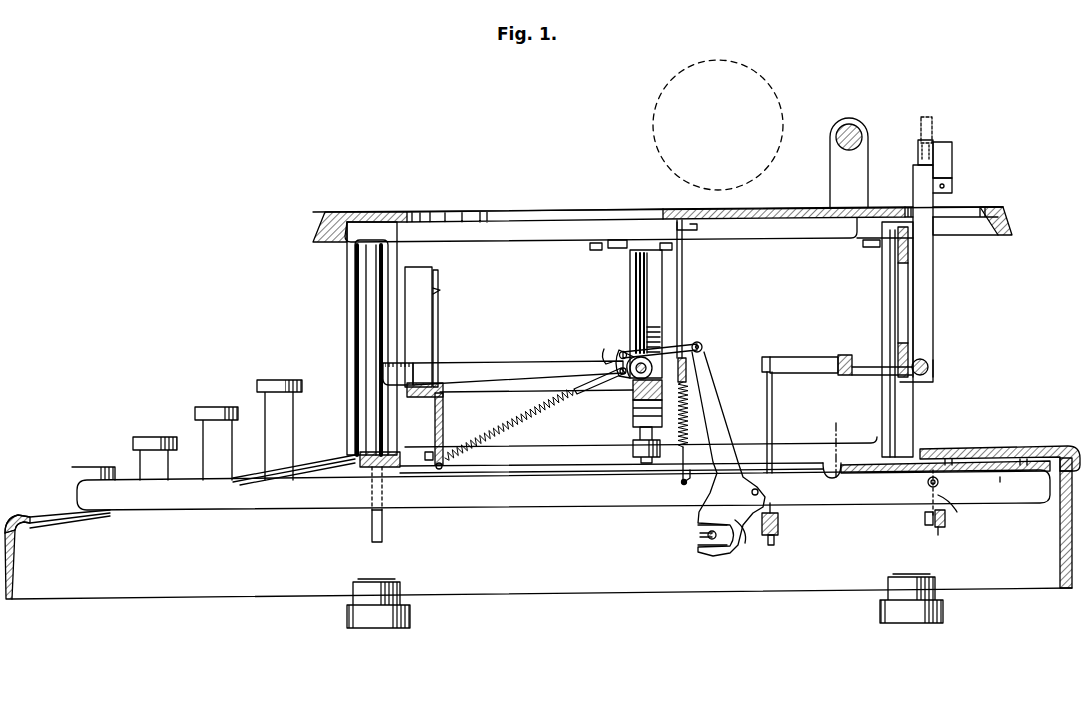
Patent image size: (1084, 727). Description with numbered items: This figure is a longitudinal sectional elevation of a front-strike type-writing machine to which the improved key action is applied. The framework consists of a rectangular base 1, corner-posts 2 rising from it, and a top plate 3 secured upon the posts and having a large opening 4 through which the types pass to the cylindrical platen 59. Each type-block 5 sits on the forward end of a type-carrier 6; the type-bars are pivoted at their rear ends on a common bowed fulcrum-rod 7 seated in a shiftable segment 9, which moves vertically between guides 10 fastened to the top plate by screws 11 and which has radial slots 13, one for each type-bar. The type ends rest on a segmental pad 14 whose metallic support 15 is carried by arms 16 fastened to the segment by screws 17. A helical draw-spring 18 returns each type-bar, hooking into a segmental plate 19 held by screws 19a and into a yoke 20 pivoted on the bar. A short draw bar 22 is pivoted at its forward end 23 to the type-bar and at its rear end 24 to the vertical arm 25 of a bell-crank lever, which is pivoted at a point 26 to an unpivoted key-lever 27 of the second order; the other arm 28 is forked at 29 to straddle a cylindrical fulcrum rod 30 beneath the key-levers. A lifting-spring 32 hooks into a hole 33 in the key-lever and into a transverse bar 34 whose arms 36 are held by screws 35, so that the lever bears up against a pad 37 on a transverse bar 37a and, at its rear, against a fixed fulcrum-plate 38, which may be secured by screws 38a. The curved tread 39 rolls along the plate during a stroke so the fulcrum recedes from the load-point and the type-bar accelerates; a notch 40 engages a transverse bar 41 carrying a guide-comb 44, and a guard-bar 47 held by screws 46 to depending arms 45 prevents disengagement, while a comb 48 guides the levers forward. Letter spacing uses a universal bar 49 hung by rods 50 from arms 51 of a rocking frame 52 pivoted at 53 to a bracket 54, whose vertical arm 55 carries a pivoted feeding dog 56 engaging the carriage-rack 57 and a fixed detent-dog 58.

The rectangular base 1 is at (946, 440).
The corner-posts 2 is at (347, 294).
The top plate 3 is at (793, 209).
The opening 4 is at (584, 219).
The type-block 5 is at (408, 368).
The type-carrier 6 is at (497, 375).
The fulcrum-rod 7 is at (652, 370).
The shiftable segment 9 is at (651, 290).
The vertical guides 10 is at (627, 248).
The screws 11 is at (601, 247).
The radial slots 13 is at (660, 352).
The segmental pad 14 is at (418, 327).
The metallic support 15 is at (428, 398).
The arms 16 is at (491, 393).
The screws 17 is at (414, 398).
The helical draw-spring 18 is at (530, 409).
The segmental plate 19 is at (443, 410).
The screws 19a is at (438, 291).
The yoke 20 is at (582, 395).
The draw bar 22 is at (688, 344).
The forward pivot 23 is at (619, 343).
The rear pivot 24 is at (703, 347).
The vertical arm 25 is at (724, 430).
The pivot 26 is at (758, 492).
The key-lever 27 is at (538, 504).
The other arm 28 is at (752, 537).
The fork 29 is at (702, 545).
The fulcrum rod 30 is at (697, 540).
The lifting-spring 32 is at (686, 432).
The hole 33 is at (681, 477).
The transverse bar 34 is at (688, 382).
The screws 35 is at (697, 227).
The arms 36 is at (683, 278).
The pad 37 is at (372, 470).
The transverse bar 37a is at (425, 453).
The fulcrum-plate 38 is at (851, 463).
The screws 38a is at (1049, 509).
The tread 39 is at (1005, 488).
The notch 40 is at (938, 483).
The transverse bar 41 is at (928, 484).
The guide-comb 44 is at (959, 508).
The depending arms 45 is at (938, 539).
The screws 46 is at (925, 524).
The guard-bar 47 is at (945, 524).
The comb 48 is at (372, 525).
The universal bar 49 is at (778, 523).
The rods 50 is at (772, 410).
The arms 51 is at (798, 362).
The rocking frame 52 is at (875, 361).
The pivot 53 is at (929, 367).
The bracket 54 is at (870, 236).
The vertical arm 55 is at (933, 273).
The feeding dog 56 is at (918, 158).
The carriage-rack 57 is at (932, 126).
The detent-dog 58 is at (952, 160).
The platen 59 is at (781, 126).